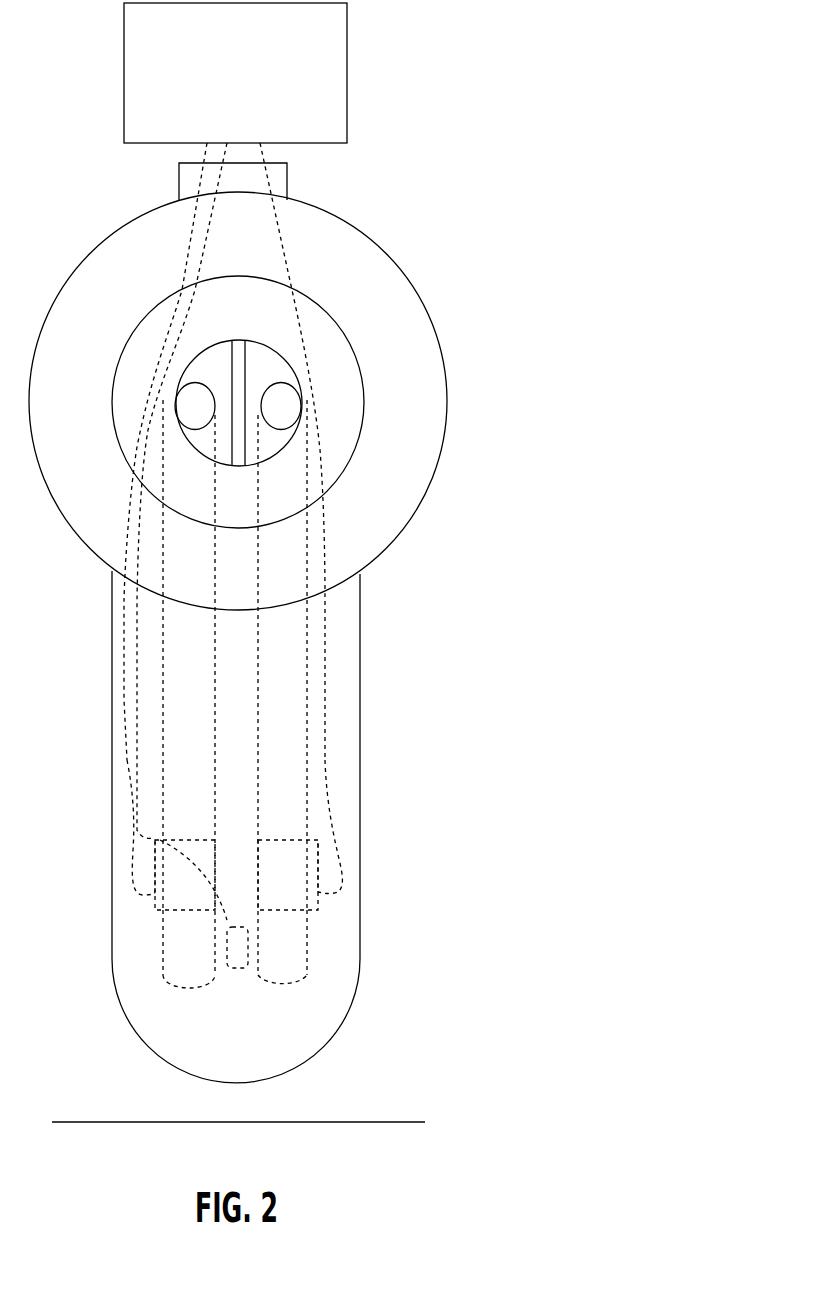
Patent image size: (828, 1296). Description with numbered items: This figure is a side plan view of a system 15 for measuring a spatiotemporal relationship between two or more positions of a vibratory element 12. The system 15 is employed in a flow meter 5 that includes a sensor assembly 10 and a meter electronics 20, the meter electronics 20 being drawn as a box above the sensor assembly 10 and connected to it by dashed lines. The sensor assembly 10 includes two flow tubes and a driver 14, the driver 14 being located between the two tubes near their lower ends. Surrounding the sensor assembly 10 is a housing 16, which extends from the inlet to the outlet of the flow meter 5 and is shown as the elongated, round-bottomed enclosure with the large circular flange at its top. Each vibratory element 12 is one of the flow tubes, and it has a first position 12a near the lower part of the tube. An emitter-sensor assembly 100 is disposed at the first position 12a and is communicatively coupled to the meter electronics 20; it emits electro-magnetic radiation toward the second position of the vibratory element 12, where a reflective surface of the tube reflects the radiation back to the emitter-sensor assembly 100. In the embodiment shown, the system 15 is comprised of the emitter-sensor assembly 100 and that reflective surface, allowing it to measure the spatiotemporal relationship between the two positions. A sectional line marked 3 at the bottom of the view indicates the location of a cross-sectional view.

The flow meter 5 is at (449, 190).
The sensor assembly 10 is at (345, 672).
The vibratory element 12 is at (193, 987).
The first position 12a is at (150, 926).
The driver 14 is at (240, 990).
The system 15 is at (97, 845).
The housing 16 is at (112, 650).
The meter electronics 20 is at (252, 122).
The emitter-sensor assembly 100 is at (155, 897).
The section line 3- 3 is at (61, 1130).